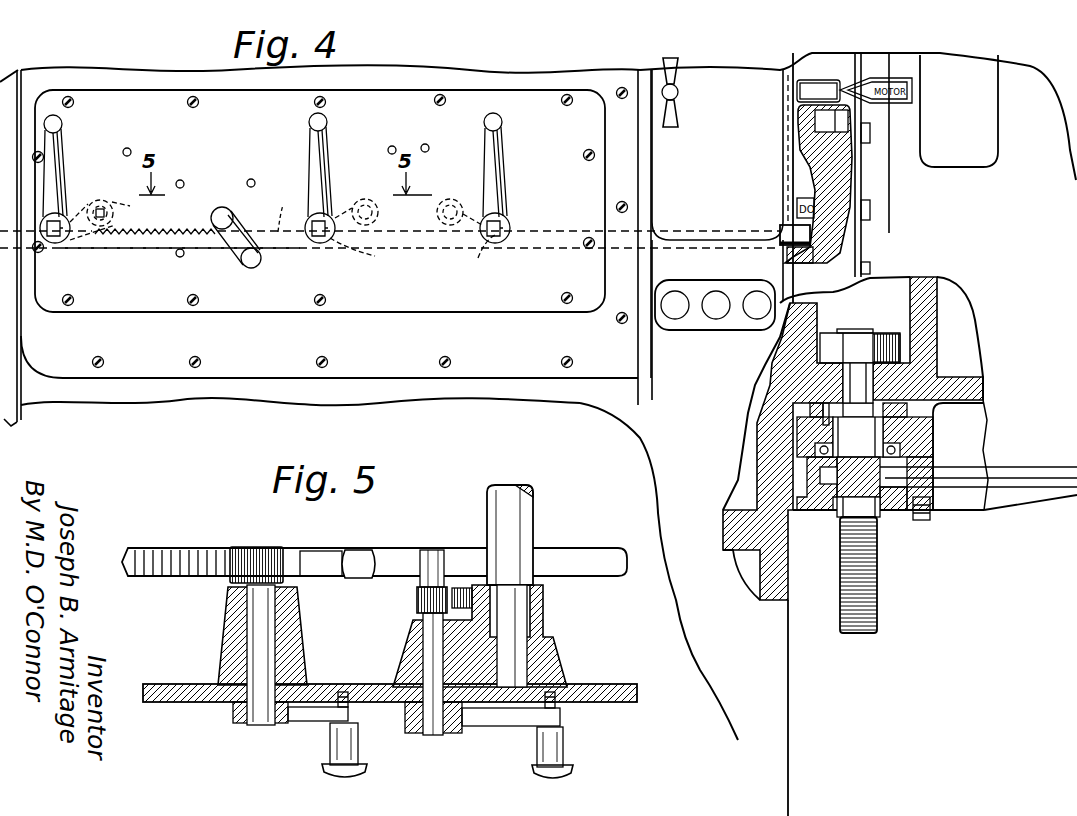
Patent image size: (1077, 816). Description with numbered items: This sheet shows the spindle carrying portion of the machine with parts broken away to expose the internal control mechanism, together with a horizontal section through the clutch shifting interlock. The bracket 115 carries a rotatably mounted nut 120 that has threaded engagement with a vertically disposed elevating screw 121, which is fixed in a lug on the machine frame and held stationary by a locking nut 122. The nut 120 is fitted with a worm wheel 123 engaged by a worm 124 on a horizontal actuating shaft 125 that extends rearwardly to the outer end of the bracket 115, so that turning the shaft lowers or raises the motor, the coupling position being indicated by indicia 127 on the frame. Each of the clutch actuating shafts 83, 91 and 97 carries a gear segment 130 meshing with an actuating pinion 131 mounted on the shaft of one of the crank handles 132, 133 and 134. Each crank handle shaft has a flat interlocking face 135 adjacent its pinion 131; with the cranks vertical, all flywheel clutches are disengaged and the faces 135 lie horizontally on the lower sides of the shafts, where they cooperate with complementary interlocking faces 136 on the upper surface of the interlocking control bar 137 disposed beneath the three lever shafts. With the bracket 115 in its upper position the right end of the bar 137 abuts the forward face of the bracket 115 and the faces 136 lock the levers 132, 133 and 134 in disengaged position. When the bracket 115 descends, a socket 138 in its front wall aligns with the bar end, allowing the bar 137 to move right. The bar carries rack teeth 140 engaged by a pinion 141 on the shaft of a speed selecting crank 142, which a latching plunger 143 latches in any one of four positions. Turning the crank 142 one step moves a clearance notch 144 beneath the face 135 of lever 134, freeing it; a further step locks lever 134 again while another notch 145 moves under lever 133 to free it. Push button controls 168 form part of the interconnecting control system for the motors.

In FIG. 4, the clutch actuating shaft 83 is at (100, 200).
In FIG. 4, the clutch actuating shaft 91 is at (368, 198).
In FIG. 5, the clutch actuating shaft 91 is at (535, 510).
In FIG. 4, the clutch actuating shaft 97 is at (452, 198).
In FIG. 4, the bracket 115 is at (1012, 503).
In FIG. 4, the nut 120 is at (870, 429).
In FIG. 4, the elevating screw 121 is at (858, 636).
In FIG. 4, the locking nut 122 is at (888, 333).
In FIG. 4, the worm wheel 123 is at (825, 512).
In FIG. 4, the worm 124 is at (882, 510).
In FIG. 4, the actuating shaft 125 is at (970, 476).
In FIG. 4, the indicia 127 is at (812, 80).
In FIG. 4, the gear segment 130 is at (372, 255).
In FIG. 5, the gear segment 130 is at (465, 588).
In FIG. 5, the actuating pinion 131 is at (417, 599).
In FIG. 4, the crank handle 132 is at (62, 124).
In FIG. 4, the crank handle 133 is at (328, 122).
In FIG. 5, the crank handle 133 is at (562, 753).
In FIG. 4, the crank handle 134 is at (503, 122).
In FIG. 4, the interlocking flat face 135 is at (56, 244).
In FIG. 5, the interlocking face 136 is at (400, 560).
In FIG. 4, the interlocking control bar 137 is at (150, 252).
In FIG. 5, the interlocking control bar 137 is at (595, 580).
In FIG. 4, the socket 138 is at (815, 122).
In FIG. 4, the rack teeth 140 is at (150, 232).
In FIG. 5, the rack teeth 140 is at (185, 534).
In FIG. 5, the pinion 141 is at (268, 534).
In FIG. 4, the speed selecting crank 142 is at (251, 268).
In FIG. 5, the speed selecting crank 142 is at (307, 722).
In FIG. 5, the latching plunger 143 is at (345, 692).
In FIG. 4, the clearance notch 144 is at (478, 255).
In FIG. 4, the notch 145 is at (280, 207).
In FIG. 5, the notch 145 is at (357, 552).
In FIG. 4, the push button controls 168 is at (677, 318).